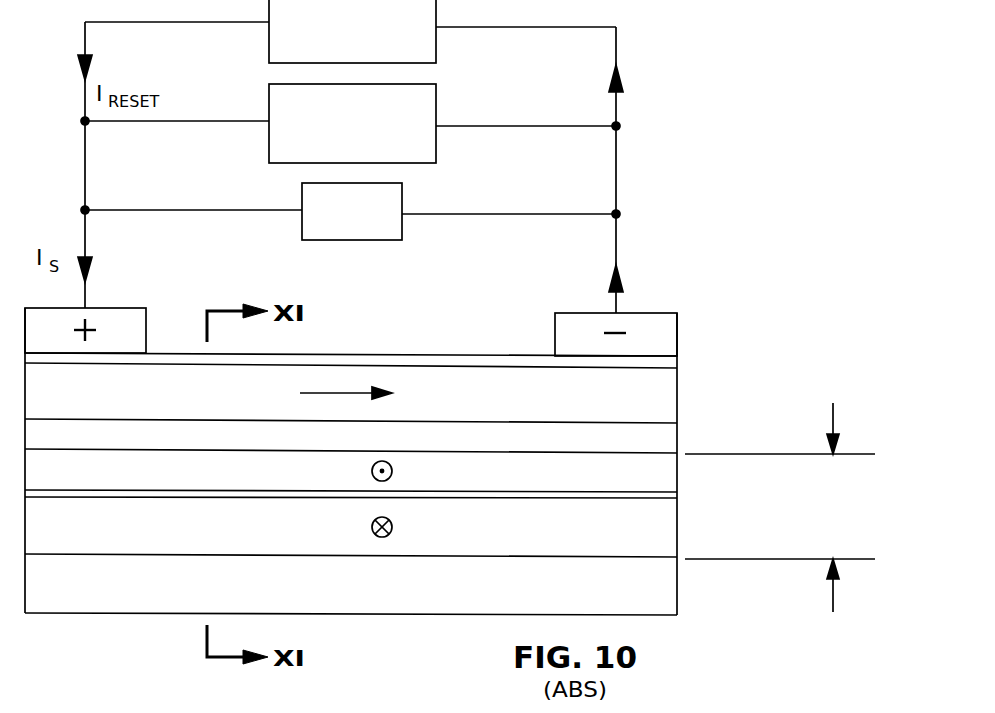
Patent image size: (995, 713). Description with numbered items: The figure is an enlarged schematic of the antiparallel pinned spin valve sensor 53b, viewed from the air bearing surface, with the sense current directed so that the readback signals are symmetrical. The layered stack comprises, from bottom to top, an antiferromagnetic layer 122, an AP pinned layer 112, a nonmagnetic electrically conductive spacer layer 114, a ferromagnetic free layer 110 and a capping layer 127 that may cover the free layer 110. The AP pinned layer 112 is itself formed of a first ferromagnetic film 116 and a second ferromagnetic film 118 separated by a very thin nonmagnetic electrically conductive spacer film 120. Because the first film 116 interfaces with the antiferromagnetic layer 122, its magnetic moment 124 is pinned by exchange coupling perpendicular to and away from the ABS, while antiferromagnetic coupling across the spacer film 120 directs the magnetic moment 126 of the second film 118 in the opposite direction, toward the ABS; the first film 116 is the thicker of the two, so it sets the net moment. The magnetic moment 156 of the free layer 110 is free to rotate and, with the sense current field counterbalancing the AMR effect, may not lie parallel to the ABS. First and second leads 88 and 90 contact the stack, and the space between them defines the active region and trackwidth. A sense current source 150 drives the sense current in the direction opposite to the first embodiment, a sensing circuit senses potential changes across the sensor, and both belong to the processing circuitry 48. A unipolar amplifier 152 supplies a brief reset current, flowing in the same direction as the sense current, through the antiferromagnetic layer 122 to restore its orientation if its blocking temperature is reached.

The unipolar amplifier 152 is at (269, 47).
The processing circuitry 48 is at (269, 147).
The sense current source 150 is at (390, 240).
The antiparallel pinned spin valve sensor 53b is at (665, 191).
The first lead 88 is at (118, 308).
The second lead 90 is at (568, 313).
The magnetic moment of the free layer 156 is at (326, 393).
The capping layer 127 is at (677, 364).
The free layer 110 is at (677, 393).
The spacer layer 114 is at (677, 437).
The second ferromagnetic film 118 is at (677, 473).
The spacer film 120 is at (677, 496).
The first ferromagnetic film 116 is at (677, 529).
The antiferromagnetic layer 122 is at (677, 592).
The antiparallel pinned layer 112 is at (780, 507).
The magnetic moment of the second film 126 is at (372, 471).
The magnetic moment of the first film 124 is at (372, 527).